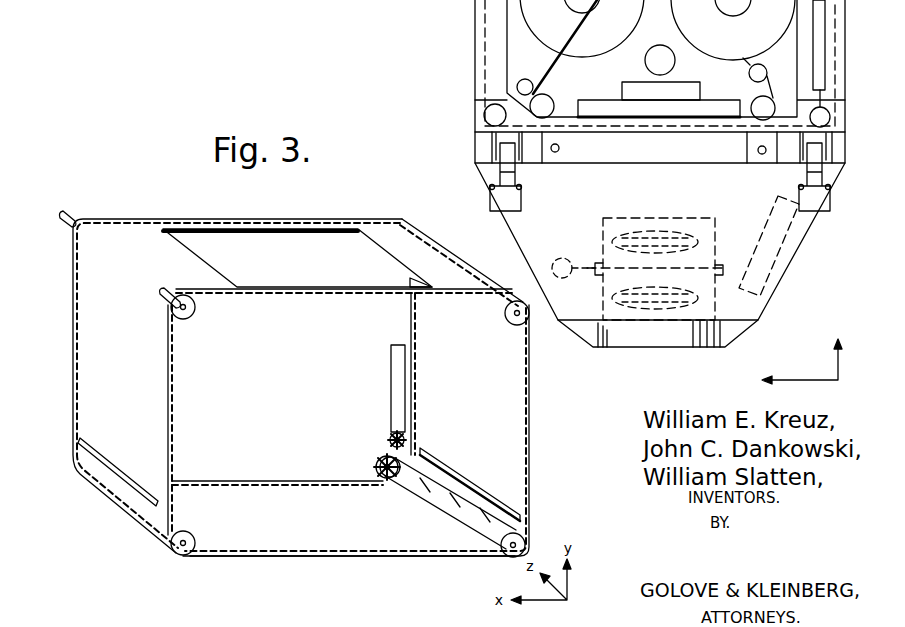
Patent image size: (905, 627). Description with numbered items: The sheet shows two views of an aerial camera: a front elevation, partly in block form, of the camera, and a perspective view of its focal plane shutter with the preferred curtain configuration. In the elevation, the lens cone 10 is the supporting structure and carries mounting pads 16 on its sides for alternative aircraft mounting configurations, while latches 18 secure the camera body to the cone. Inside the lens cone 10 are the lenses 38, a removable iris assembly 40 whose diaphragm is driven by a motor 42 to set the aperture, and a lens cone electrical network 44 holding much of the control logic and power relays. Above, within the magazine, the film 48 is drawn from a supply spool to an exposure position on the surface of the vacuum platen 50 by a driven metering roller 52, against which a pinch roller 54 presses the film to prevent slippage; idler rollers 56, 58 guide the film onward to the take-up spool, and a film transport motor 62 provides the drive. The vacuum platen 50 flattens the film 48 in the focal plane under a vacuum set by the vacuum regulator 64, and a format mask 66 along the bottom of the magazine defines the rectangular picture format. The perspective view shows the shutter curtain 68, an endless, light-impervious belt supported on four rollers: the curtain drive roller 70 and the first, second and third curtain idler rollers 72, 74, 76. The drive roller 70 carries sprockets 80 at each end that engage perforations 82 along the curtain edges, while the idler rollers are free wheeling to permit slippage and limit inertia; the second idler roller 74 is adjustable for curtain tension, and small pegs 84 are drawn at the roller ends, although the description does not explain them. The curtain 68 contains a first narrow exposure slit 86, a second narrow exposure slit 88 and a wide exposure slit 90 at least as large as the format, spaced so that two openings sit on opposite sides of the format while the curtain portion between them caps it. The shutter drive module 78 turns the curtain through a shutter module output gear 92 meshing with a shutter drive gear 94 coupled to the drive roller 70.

In FIG. 2, the lens cone 10 is at (812, 249).
In FIG. 2, the mounting pads 16 is at (567, 157).
In FIG. 2, the latches 18 is at (500, 194).
In FIG. 2, the lenses 38 is at (652, 288).
In FIG. 2, the removable iris assembly 40 is at (598, 262).
In FIG. 2, the motor 42 is at (551, 261).
In FIG. 2, the lens cone electrical network 44 is at (783, 245).
In FIG. 2, the film 48 is at (548, 63).
In FIG. 2, the vacuum platen 50 is at (613, 103).
In FIG. 2, the metering roller 52 is at (547, 100).
In FIG. 2, the pinch roller 54 is at (517, 88).
In FIG. 2, the idler roller 56 is at (768, 72).
In FIG. 2, the idler roller 58 is at (776, 102).
In FIG. 2, the film transport motor 62 is at (664, 53).
In FIG. 2, the vacuum regulator 64 is at (685, 90).
In FIG. 2, the format mask 66 is at (697, 117).
In FIG. 3, the shutter curtain 68 is at (101, 371).
In FIG. 2, the curtain drive roller 70 is at (834, 124).
In FIG. 3, the curtain drive roller 70 is at (506, 532).
In FIG. 3, the first curtain idler roller 72 is at (530, 311).
In FIG. 3, the second curtain idler roller 74 is at (195, 318).
In FIG. 2, the third curtain idler roller 76 is at (485, 116).
In FIG. 3, the third curtain idler roller 76 is at (171, 548).
In FIG. 2, the shutter drive module 78 is at (827, 43).
In FIG. 3, the shutter drive module 78 is at (390, 367).
In FIG. 3, the sprockets 80 is at (487, 530).
In FIG. 3, the perforations 82 is at (297, 548).
In FIG. 3, the locating peg 84 is at (76, 218).
In FIG. 3, the first narrow exposure slit 86 is at (128, 483).
In FIG. 3, the second narrow exposure slit 88 is at (493, 497).
In FIG. 3, the wide exposure slit 90 is at (373, 242).
In FIG. 3, the shutter module output gear 92 is at (392, 438).
In FIG. 3, the shutter drive gear 94 is at (377, 463).